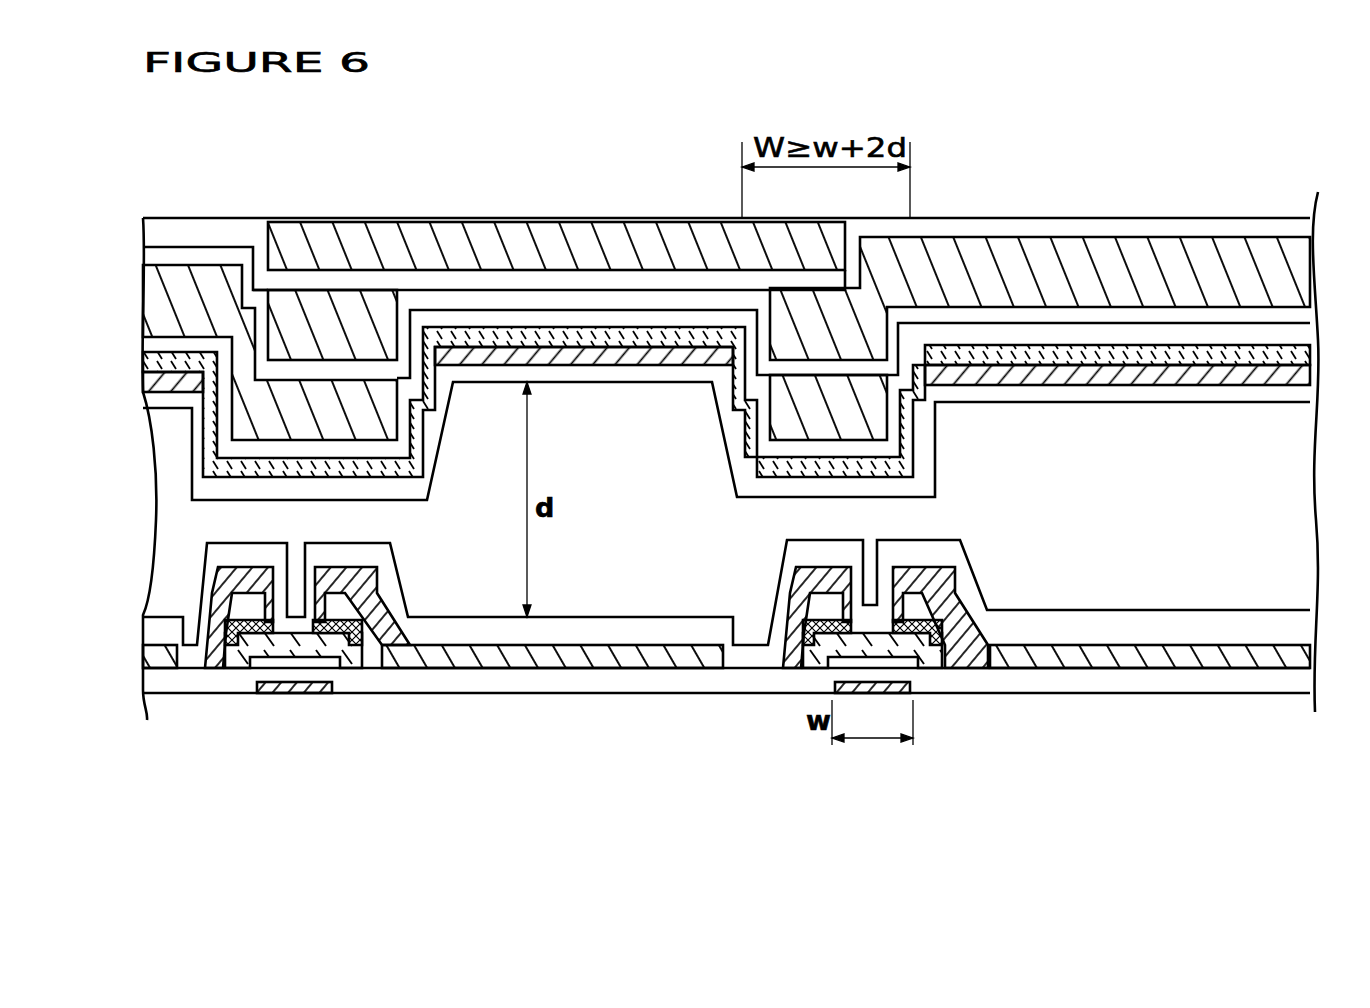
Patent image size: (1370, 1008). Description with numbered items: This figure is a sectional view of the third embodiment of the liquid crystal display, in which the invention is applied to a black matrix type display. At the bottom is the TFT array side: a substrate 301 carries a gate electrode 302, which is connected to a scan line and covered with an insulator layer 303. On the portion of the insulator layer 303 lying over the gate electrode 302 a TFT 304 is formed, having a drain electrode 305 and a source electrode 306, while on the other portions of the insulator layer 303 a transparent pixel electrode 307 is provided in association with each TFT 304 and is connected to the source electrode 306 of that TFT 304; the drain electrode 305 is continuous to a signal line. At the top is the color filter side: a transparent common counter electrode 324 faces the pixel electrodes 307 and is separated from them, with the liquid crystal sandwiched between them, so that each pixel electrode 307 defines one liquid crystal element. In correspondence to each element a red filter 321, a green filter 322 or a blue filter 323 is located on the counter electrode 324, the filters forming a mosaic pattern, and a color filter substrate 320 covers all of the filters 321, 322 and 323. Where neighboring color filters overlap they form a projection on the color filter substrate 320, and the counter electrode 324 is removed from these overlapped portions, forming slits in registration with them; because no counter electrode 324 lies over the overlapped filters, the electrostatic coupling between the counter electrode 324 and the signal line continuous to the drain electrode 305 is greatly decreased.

The substrate 301 is at (465, 820).
The gate electrode 302 is at (300, 695).
The insulator layer 303 is at (392, 683).
The TFT 304 is at (243, 705).
The drain electrode 305 is at (793, 572).
The source electrode 306 is at (957, 588).
The pixel electrode 307 is at (493, 653).
The color filter substrate 320 is at (458, 97).
The red filter 321 is at (652, 246).
The green filter 322 is at (333, 296).
The blue filter 323 is at (165, 283).
The counter electrode 324 is at (588, 350).